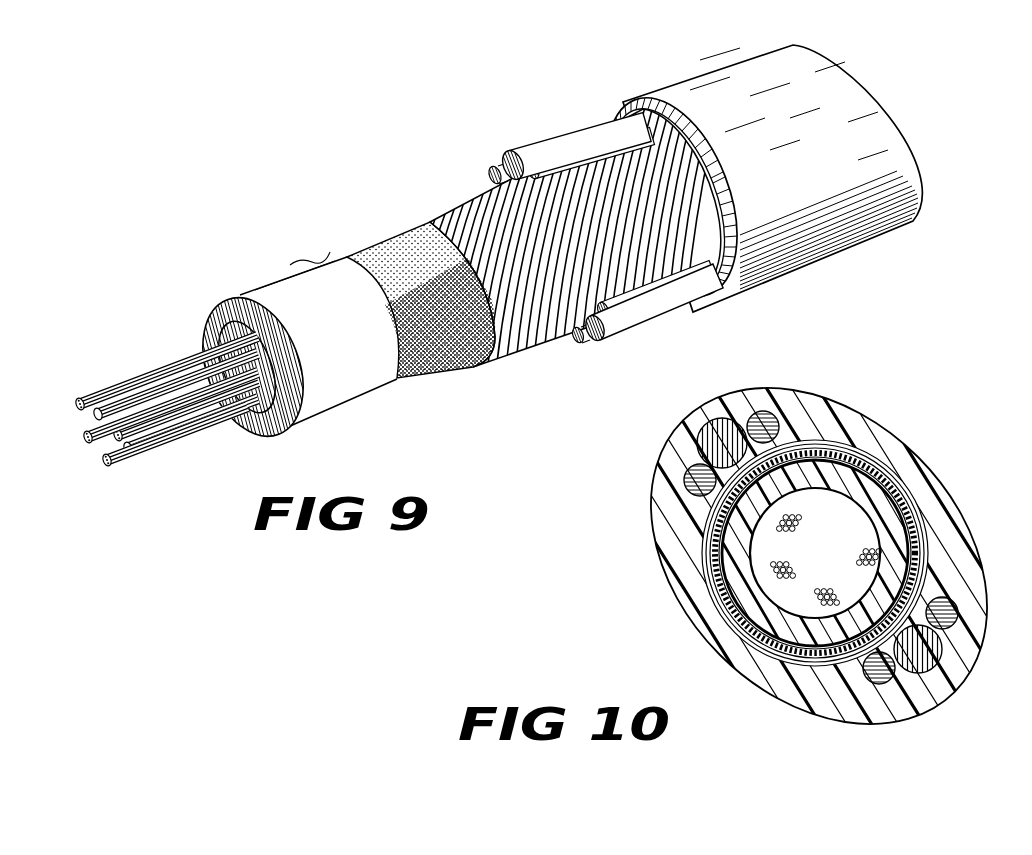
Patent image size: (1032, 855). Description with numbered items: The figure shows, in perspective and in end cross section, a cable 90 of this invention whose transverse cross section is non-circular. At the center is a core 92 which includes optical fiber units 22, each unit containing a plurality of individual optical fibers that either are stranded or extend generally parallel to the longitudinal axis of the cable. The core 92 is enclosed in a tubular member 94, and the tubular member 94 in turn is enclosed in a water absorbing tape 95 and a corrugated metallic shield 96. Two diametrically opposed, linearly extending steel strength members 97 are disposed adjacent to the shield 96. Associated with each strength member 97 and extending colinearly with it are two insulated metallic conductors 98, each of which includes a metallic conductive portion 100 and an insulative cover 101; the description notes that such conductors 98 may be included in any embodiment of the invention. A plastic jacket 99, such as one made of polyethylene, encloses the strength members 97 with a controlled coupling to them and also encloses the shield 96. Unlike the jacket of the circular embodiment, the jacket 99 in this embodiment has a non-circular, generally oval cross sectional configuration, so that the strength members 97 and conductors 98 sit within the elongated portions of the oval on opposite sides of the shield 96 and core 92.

In FIG. 9, the optical fiber unit 22 is at (86, 392).
In FIG. 10, the optical fiber unit 22 is at (792, 561).
In FIG. 9, the cable 90 is at (376, 122).
In FIG. 10, the cable 90 is at (939, 432).
In FIG. 9, the core 92 is at (167, 416).
In FIG. 10, the core 92 is at (851, 572).
In FIG. 9, the tubular member 94 is at (326, 410).
In FIG. 10, the tubular member 94 is at (860, 495).
In FIG. 9, the water absorbing tape 95 is at (410, 370).
In FIG. 10, the water absorbing tape 95 is at (955, 518).
In FIG. 9, the corrugated metallic shield 96 is at (415, 215).
In FIG. 10, the corrugated metallic shield 96 is at (826, 440).
In FIG. 9, the steel strength member 97 is at (517, 150).
In FIG. 10, the steel strength member 97 is at (698, 434).
In FIG. 9, the insulated metallic conductor 98 is at (491, 171).
In FIG. 10, the insulated metallic conductor 98 is at (805, 392).
In FIG. 9, the plastic jacket 99 is at (721, 299).
In FIG. 10, the plastic jacket 99 is at (726, 390).
In FIG. 10, the metallic conductive portion 100 is at (960, 605).
In FIG. 10, the insulative cover 101 is at (955, 658).